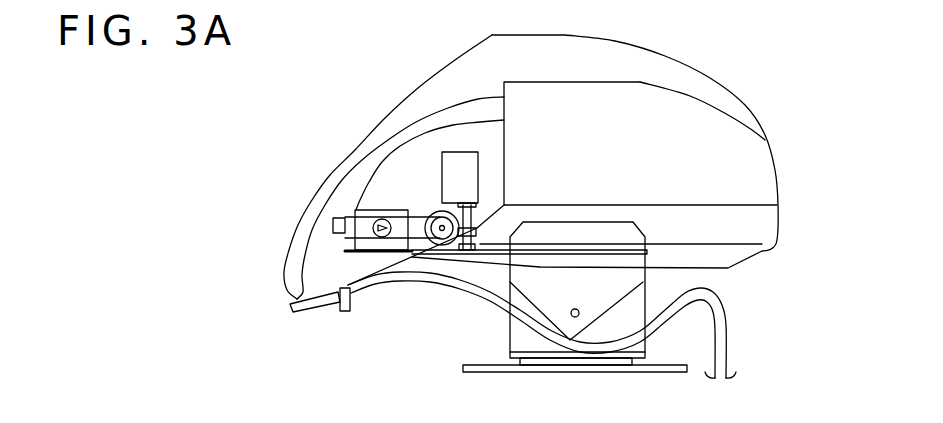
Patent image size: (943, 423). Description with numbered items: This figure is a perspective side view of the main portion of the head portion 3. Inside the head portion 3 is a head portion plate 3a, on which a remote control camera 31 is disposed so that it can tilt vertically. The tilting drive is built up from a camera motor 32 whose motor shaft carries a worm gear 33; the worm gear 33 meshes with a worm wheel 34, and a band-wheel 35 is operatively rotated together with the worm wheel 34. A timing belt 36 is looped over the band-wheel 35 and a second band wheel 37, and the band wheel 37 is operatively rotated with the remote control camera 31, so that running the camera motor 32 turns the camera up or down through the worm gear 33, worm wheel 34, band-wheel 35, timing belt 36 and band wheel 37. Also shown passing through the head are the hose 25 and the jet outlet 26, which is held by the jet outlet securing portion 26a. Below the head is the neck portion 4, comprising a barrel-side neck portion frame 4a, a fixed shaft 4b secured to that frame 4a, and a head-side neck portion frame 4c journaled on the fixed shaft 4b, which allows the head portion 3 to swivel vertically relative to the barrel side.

The head portion 3 is at (787, 105).
The head portion plate 3a is at (413, 254).
The neck portion 4 is at (733, 309).
The barrel-side neck portion frame 4a is at (613, 328).
The fixed shaft 4b is at (580, 314).
The head-side neck portion frame 4c is at (633, 277).
The hose 25 is at (523, 328).
The jet outlet 26 is at (291, 306).
The jet outlet securing portion 26a is at (337, 302).
The remote control camera 31 is at (335, 220).
The camera motor 32 is at (462, 167).
The worm gear 33 is at (478, 227).
The worm wheel 34 is at (447, 246).
The band-wheel 35 is at (431, 254).
The timing belt 36 is at (417, 212).
The band wheel 37 is at (353, 242).